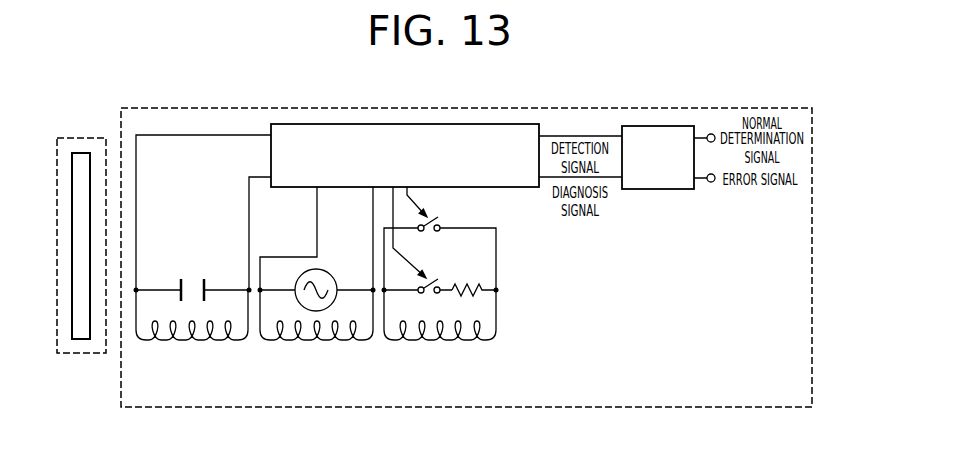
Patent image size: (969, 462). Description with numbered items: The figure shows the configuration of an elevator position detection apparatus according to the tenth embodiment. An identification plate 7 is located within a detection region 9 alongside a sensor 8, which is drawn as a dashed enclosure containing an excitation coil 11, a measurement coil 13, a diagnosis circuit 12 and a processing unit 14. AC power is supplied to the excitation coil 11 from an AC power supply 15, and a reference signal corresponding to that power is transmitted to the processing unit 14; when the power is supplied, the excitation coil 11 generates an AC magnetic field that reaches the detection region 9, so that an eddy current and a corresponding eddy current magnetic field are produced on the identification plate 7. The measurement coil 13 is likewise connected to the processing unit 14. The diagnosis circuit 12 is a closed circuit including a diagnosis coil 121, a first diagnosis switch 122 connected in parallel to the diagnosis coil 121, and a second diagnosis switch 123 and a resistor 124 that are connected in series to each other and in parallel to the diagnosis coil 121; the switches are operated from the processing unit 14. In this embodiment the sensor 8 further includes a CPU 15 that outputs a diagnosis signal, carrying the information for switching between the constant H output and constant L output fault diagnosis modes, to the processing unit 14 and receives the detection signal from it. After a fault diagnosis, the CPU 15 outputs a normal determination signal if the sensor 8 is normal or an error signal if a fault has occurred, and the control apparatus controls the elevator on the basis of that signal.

The identification plate 7 is at (81, 152).
The sensor 8 is at (689, 108).
The detection region 9 is at (113, 357).
The excitation coil 11 is at (302, 341).
The diagnosis circuit 12 is at (473, 294).
The measurement coil 13 is at (183, 341).
The processing unit 14 is at (513, 187).
The CPU 15 is at (660, 190).
The diagnosis coil 121 is at (427, 341).
The first diagnosis switch 122 is at (438, 217).
The second diagnosis switch 123 is at (436, 278).
The resistor 124 is at (467, 284).